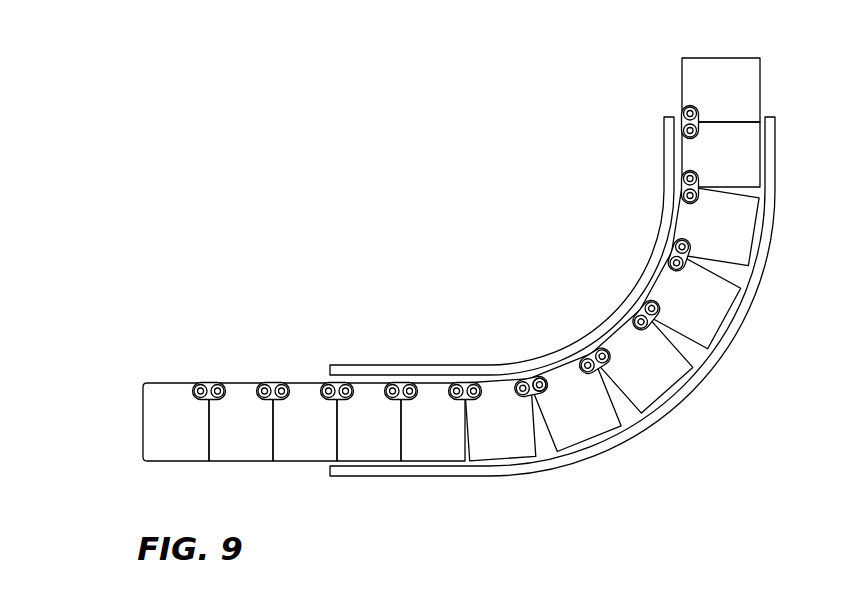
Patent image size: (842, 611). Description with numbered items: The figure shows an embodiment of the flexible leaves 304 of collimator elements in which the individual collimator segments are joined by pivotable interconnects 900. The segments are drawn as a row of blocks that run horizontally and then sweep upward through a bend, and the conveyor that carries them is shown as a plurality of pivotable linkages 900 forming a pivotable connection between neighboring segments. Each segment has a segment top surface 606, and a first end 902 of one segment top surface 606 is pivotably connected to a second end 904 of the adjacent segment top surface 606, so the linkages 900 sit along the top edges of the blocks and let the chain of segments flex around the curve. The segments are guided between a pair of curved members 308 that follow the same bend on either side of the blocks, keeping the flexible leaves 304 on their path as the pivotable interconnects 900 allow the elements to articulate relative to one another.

The flexible leaves 304 is at (229, 356).
The guide rail 308 is at (388, 365).
The segment top surface 606 is at (138, 432).
The pivotable interconnect 900 is at (536, 396).
The first end 902 is at (545, 383).
The second end 904 is at (532, 381).